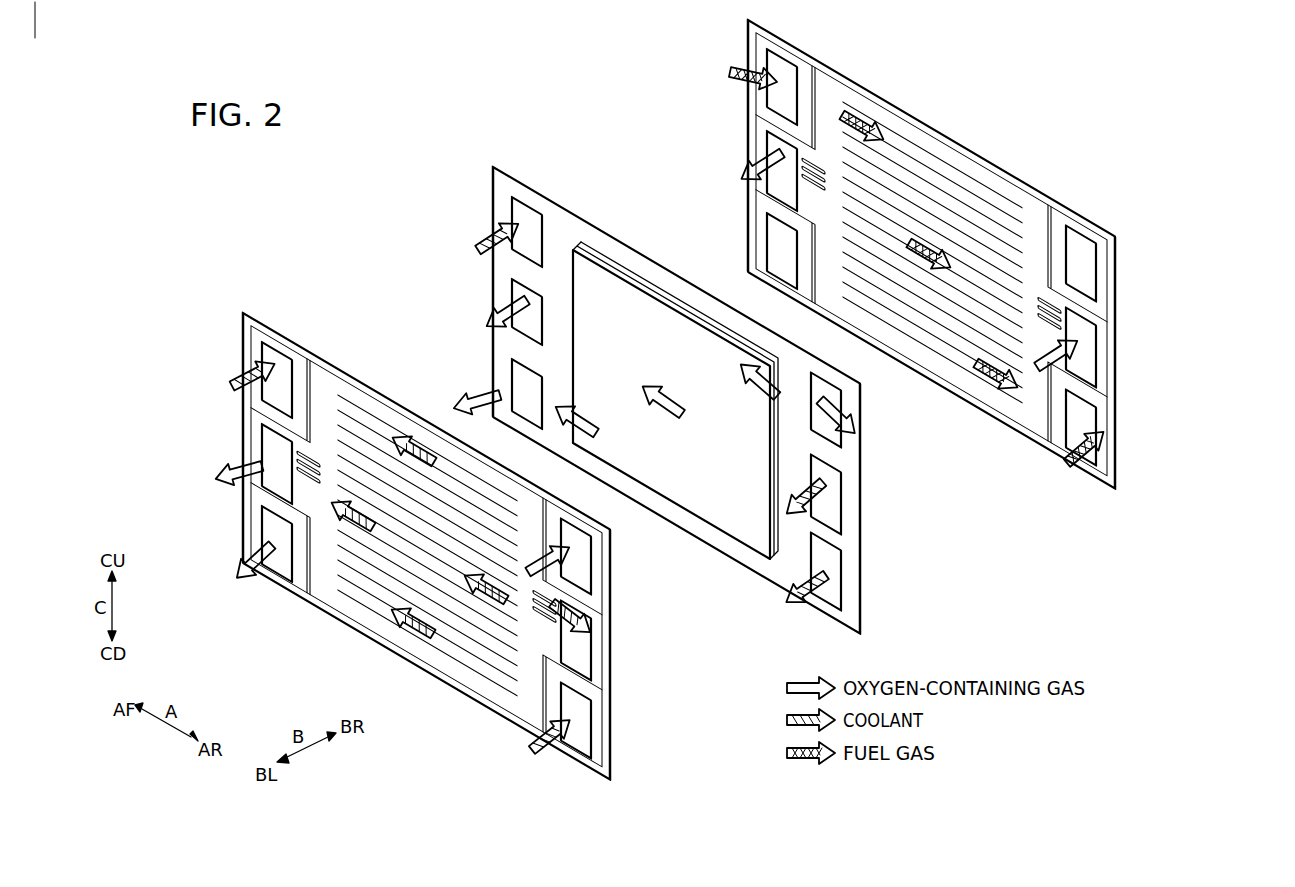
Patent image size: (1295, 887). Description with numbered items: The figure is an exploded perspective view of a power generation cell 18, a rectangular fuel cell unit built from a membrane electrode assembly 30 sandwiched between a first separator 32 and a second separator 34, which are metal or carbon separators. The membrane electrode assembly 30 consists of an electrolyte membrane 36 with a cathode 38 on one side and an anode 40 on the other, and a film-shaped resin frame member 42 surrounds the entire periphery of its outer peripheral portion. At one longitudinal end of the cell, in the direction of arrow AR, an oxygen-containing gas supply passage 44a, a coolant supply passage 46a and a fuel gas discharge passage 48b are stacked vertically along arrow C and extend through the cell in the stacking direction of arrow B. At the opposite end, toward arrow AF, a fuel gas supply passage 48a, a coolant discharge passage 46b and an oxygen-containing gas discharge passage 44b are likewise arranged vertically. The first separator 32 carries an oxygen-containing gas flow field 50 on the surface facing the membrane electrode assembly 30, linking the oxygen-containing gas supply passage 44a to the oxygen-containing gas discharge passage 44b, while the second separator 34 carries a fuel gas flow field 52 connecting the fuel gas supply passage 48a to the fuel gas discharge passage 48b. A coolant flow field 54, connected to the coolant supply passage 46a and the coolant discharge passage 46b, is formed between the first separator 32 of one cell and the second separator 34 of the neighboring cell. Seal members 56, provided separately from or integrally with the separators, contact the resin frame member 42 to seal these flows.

The power generation cell 18 is at (348, 204).
The membrane electrode assembly 30 is at (700, 191).
The first separator 32 is at (238, 318).
The second separator 34 is at (742, 31).
The electrolyte membrane 36 is at (675, 330).
The cathode 38 is at (610, 285).
The anode 40 is at (646, 283).
The resin frame member 42 is at (579, 232).
The oxygen-containing gas supply passage 44a is at (582, 567).
The oxygen-containing gas discharge passage 44b is at (272, 522).
The coolant supply passage 46a is at (582, 627).
The coolant discharge passage 46b is at (270, 444).
The fuel gas supply passage 48a is at (272, 357).
The fuel gas discharge passage 48b is at (582, 712).
The oxygen-containing gas flow field 50 is at (450, 630).
The fuel gas flow field 52 is at (960, 345).
The coolant flow field 54 is at (358, 585).
The seal member 56 is at (327, 370).